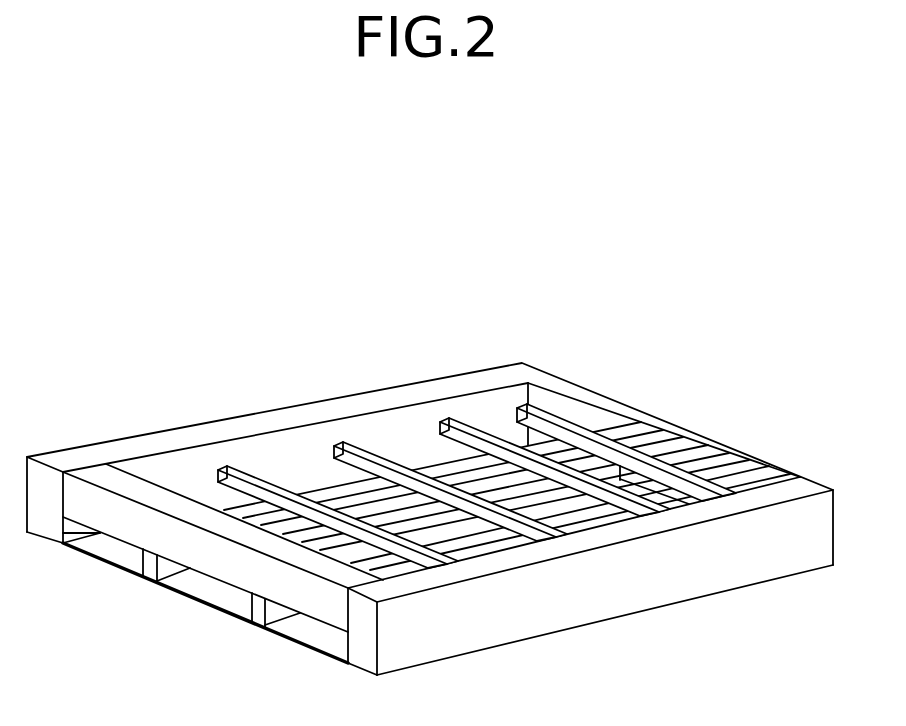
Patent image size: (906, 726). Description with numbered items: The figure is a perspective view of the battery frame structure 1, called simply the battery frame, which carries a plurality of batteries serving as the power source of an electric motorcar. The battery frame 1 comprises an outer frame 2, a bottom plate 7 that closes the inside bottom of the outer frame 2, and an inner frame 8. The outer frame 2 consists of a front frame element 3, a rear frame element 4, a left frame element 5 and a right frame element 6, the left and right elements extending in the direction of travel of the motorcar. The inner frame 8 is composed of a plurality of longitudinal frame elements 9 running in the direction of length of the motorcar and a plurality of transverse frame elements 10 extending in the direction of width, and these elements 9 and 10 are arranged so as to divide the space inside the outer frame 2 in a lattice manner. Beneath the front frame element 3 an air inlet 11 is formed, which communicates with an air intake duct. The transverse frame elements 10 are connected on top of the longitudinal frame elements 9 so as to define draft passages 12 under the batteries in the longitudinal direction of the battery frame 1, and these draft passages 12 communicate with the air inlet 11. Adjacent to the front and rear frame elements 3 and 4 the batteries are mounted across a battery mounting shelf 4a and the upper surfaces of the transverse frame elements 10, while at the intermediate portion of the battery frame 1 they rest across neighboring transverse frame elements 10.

The battery frame structure 1 is at (585, 368).
The outer frame 2 is at (444, 375).
The front frame element 3 is at (92, 472).
The rear frame element 4 is at (758, 470).
The battery mounting shelf 4a is at (632, 465).
The left frame element 5 is at (622, 600).
The right frame element 6 is at (182, 430).
The bottom plate 7 is at (302, 632).
The inner frame 8 is at (400, 452).
The longitudinal frame element 9 is at (568, 455).
The transverse frame element 10 is at (247, 470).
The air inlet 11 is at (100, 550).
The draft passage 12 is at (315, 495).